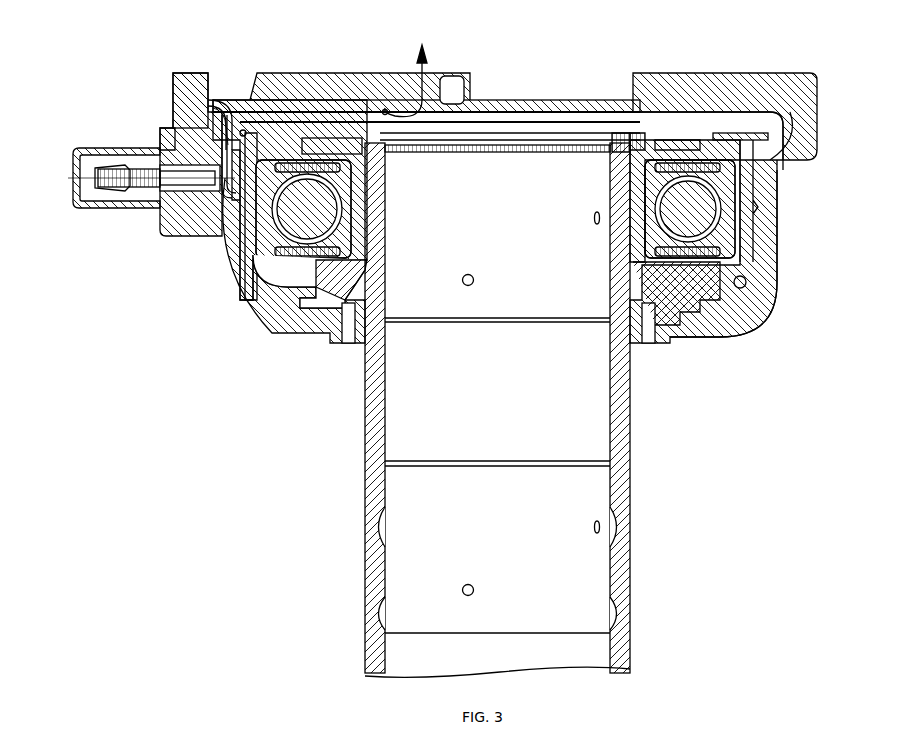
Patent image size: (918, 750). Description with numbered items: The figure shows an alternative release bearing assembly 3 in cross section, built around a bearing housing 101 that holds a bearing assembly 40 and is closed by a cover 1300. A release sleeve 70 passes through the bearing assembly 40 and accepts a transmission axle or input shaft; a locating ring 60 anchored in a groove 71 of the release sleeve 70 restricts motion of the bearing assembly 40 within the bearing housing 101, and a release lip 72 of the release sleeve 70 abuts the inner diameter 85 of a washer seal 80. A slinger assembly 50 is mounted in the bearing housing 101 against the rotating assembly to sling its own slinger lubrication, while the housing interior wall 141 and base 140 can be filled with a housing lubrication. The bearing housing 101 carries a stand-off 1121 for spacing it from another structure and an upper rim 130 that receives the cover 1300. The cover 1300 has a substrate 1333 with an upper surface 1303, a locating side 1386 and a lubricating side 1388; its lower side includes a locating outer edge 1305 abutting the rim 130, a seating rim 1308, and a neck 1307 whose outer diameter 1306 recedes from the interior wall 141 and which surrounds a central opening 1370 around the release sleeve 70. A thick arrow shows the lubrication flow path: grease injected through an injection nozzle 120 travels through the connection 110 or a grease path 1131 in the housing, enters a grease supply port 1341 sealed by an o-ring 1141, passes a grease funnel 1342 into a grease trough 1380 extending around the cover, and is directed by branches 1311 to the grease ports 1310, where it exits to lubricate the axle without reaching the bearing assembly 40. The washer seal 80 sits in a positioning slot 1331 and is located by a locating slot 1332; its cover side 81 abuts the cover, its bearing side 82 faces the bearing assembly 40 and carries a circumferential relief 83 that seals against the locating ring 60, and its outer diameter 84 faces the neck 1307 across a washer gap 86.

The release bearing assembly 3 is at (68, 86).
The bearing assembly 40 is at (785, 222).
The slinger assembly 50 is at (672, 345).
The locating ring 60 is at (615, 133).
The release sleeve 70 is at (512, 147).
The groove 71 is at (616, 145).
The release lip 72 is at (625, 132).
The washer seal 80 is at (637, 132).
The cover side 81 is at (672, 135).
The bearing side 82 is at (335, 172).
The circumferential relief 83 is at (330, 168).
The outer diameter 84 is at (340, 230).
The inner diameter 85 is at (405, 150).
The washer gap 86 is at (272, 222).
The bearing housing 101 is at (715, 342).
The connection 110 is at (203, 195).
The injection nozzle 120 is at (90, 210).
The upper rim 130 is at (785, 143).
The base 140 is at (745, 275).
The interior wall 141 is at (756, 205).
The stand-off 1121 is at (178, 83).
The grease path 1131 is at (232, 180).
The o-ring 1141 is at (198, 140).
The cover 1300 is at (808, 100).
The upper surface 1303 is at (735, 108).
The locating outer edge 1305 is at (775, 127).
The outer diameter 1306 is at (745, 155).
The neck 1307 is at (683, 148).
The seating rim 1308 is at (690, 125).
The grease ports 1310 is at (430, 112).
The branches 1311 is at (342, 122).
The positioning slot 1331 is at (660, 140).
The locating slot 1332 is at (316, 150).
The substrate 1333 is at (278, 148).
The grease supply port 1341 is at (200, 110).
The grease funnel 1342 is at (250, 120).
The central opening 1370 is at (620, 145).
The grease trough 1380 is at (320, 138).
The locating side 1386 is at (210, 105).
The lubricating side 1388 is at (385, 108).